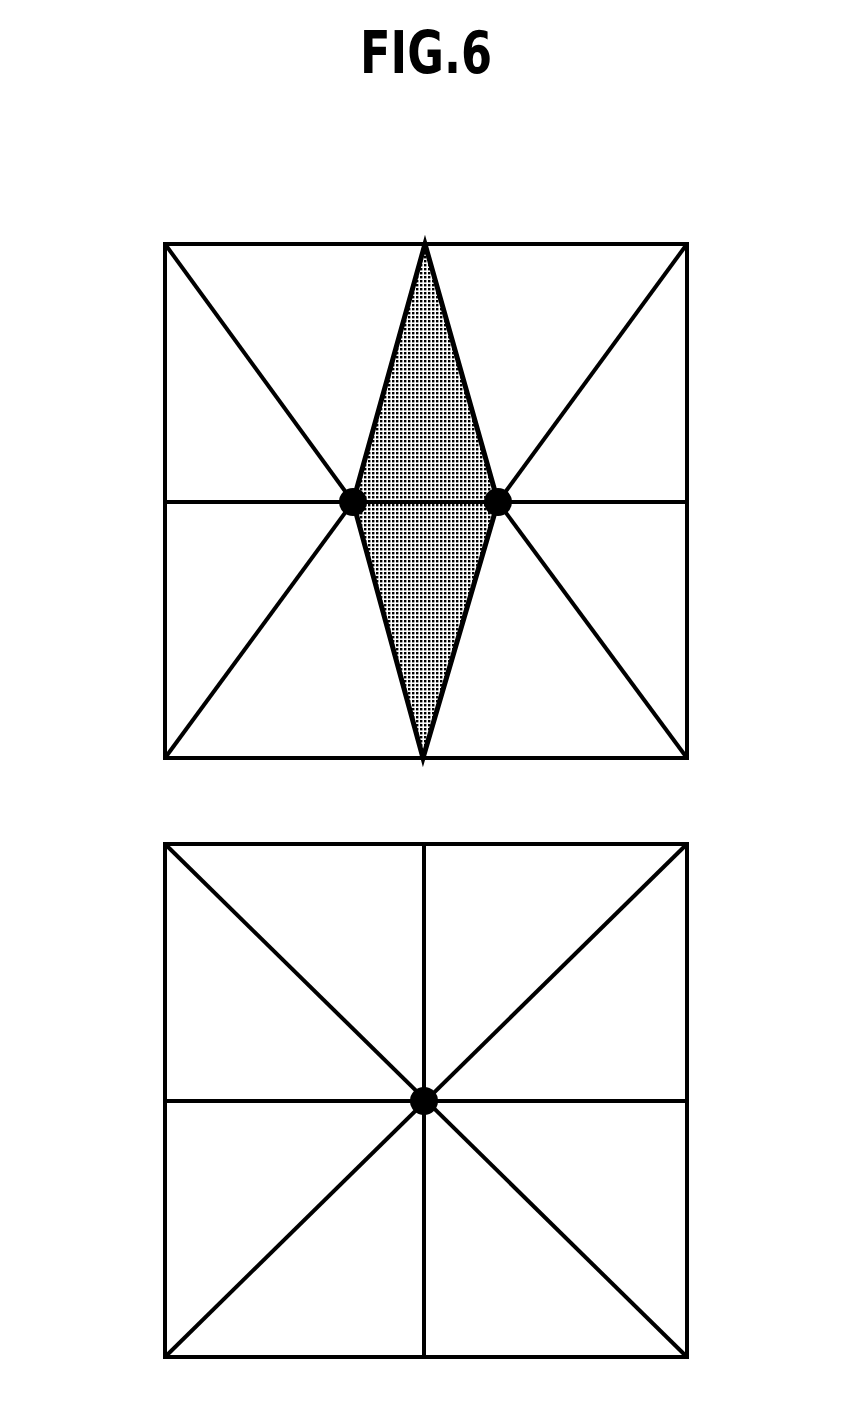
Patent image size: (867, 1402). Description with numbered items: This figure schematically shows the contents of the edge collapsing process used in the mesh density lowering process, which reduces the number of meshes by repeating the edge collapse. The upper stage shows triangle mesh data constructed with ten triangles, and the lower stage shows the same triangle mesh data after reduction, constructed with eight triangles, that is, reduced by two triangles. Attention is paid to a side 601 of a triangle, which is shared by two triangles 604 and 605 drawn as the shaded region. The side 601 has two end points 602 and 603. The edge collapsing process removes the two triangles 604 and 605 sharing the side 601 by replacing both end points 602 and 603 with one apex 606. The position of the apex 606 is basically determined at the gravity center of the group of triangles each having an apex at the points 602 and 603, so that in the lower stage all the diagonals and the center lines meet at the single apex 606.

The side 601 is at (423, 525).
The end point 602 is at (302, 488).
The end point 603 is at (545, 490).
The triangle 604 is at (425, 418).
The triangle 605 is at (445, 590).
The apex 606 is at (460, 1092).